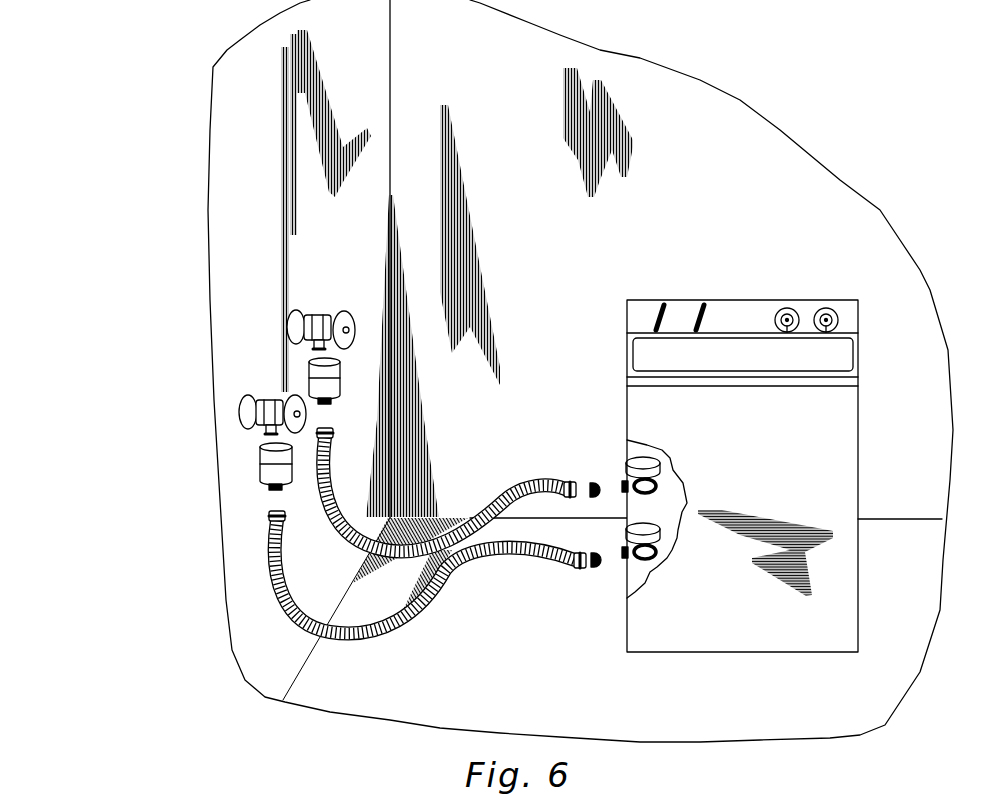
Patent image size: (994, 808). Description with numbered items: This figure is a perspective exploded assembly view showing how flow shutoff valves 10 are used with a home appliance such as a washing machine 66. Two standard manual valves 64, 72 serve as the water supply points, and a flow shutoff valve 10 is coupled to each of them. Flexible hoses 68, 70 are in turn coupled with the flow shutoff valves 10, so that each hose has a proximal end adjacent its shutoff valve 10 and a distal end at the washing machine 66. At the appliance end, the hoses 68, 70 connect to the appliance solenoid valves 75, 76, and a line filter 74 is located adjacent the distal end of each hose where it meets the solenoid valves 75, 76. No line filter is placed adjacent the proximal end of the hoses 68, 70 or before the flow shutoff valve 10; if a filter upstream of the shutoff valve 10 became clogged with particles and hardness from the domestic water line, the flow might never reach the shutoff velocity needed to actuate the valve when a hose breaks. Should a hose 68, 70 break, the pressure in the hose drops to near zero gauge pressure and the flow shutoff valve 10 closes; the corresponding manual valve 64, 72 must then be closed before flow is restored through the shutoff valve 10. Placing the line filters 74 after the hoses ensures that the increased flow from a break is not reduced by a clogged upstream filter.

The flow shutoff valve 10 is at (311, 372).
The standard manual valve 64 is at (305, 312).
The washing machine 66 is at (715, 298).
The flexible hose 68 is at (466, 565).
The flexible hose 70 is at (482, 507).
The standard manual valve 72 is at (245, 408).
The line filter 74 is at (594, 482).
The appliance solenoid valve 75 is at (641, 455).
The appliance solenoid valve 76 is at (645, 585).